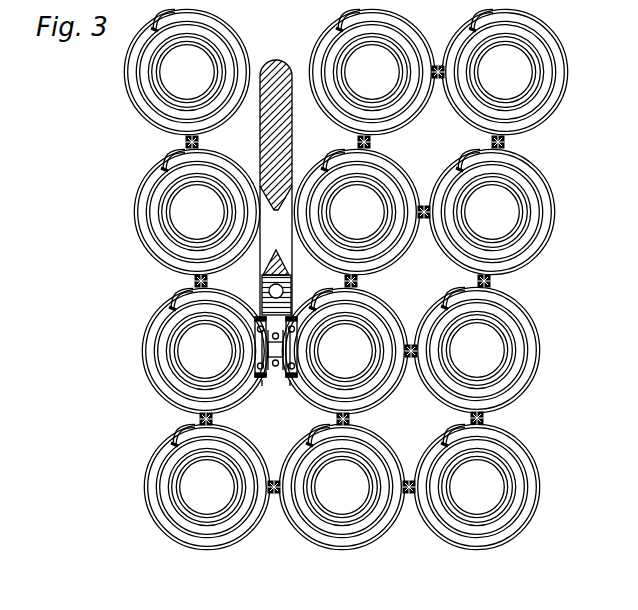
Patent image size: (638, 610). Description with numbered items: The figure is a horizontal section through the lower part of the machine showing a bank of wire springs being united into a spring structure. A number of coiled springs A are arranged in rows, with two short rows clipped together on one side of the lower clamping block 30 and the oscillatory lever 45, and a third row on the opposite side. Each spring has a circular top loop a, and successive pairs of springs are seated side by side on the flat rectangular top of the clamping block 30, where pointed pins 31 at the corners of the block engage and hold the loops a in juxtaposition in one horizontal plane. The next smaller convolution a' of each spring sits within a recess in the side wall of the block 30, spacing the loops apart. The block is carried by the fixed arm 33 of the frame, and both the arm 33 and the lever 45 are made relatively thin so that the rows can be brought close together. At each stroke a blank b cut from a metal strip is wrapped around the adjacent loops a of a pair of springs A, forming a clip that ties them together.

The coiled wire spring A is at (149, 352).
The blank b is at (351, 415).
The oscillatory lever 45 is at (261, 141).
The fixed arm 33 is at (266, 272).
The lower clamping block 30 is at (270, 376).
The pointed projections or pins 31 is at (257, 327).
The sub-coil or convolution a' is at (271, 349).
The circular top loop a is at (279, 397).